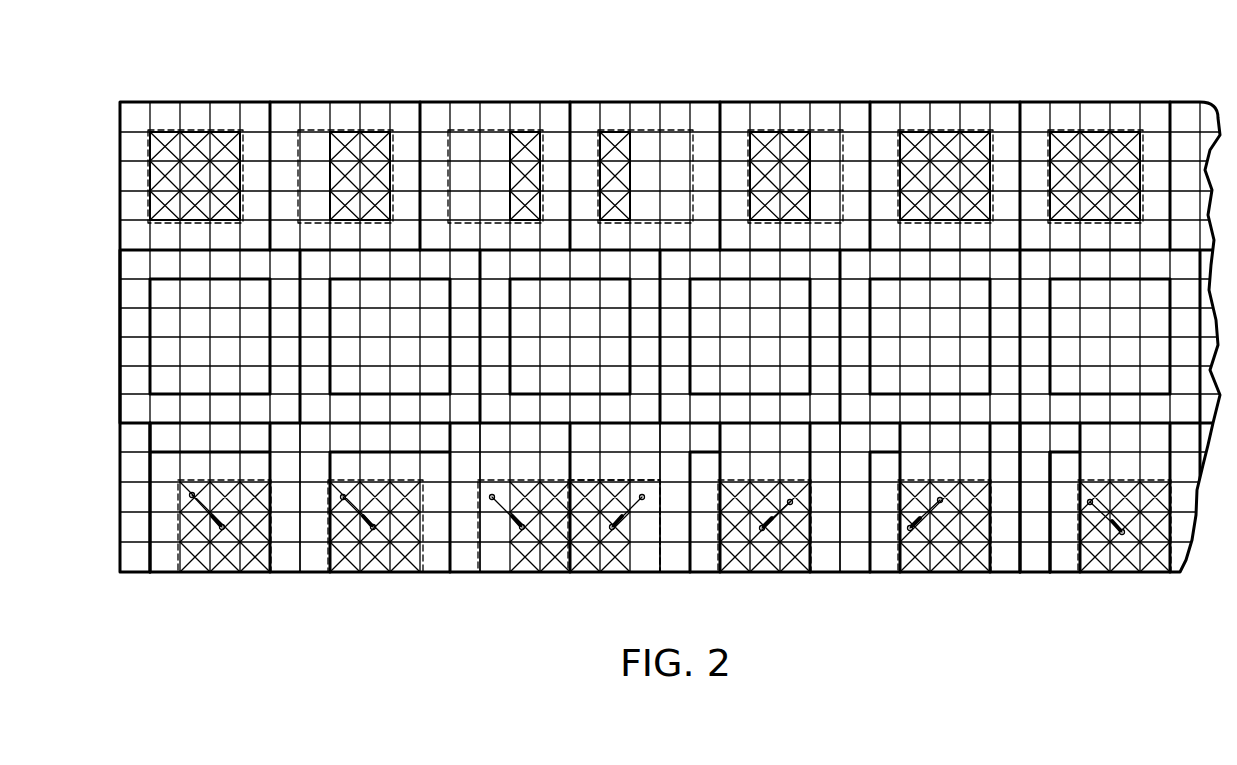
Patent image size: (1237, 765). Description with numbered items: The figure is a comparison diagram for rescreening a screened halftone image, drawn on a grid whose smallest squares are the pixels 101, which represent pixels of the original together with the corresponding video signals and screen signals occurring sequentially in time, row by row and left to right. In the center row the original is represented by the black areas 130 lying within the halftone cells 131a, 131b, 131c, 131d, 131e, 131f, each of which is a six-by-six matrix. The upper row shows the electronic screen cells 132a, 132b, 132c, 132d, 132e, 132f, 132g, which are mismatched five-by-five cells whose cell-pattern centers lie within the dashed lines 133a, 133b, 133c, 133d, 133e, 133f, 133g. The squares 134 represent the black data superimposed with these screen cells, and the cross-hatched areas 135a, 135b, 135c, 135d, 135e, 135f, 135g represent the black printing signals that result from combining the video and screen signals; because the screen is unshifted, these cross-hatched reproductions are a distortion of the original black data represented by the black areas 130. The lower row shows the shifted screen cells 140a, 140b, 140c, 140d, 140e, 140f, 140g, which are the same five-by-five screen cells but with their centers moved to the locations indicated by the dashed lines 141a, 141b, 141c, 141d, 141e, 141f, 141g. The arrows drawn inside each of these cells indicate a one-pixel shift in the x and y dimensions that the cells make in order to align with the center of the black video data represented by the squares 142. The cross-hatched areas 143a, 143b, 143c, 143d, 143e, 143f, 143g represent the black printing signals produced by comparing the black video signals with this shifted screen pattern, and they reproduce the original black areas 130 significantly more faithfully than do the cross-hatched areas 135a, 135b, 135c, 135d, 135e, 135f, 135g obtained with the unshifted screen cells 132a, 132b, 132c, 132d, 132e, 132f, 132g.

The pixels 101 is at (130, 380).
The black areas 130 is at (227, 397).
The halftone cell 131a is at (130, 271).
The halftone cell 131b is at (312, 271).
The halftone cell 131c is at (492, 271).
The halftone cell 131d is at (668, 272).
The halftone cell 131e is at (850, 271).
The halftone cell 131f is at (1030, 271).
The electronic screen cell 132a is at (272, 102).
The electronic screen cell 132b is at (422, 102).
The electronic screen cell 132c is at (612, 74).
The electronic screen cell 132d is at (712, 100).
The electronic screen cell 132e is at (848, 102).
The electronic screen cell 132f is at (972, 102).
The electronic screen cell 132g is at (1072, 102).
The dashed lines 133a is at (197, 130).
The dashed lines 133b is at (368, 128).
The dashed lines 133c is at (543, 90).
The dashed lines 133d is at (650, 128).
The dashed lines 133e is at (778, 128).
The dashed lines 133f is at (937, 128).
The dashed lines 133g is at (1082, 128).
The squares 134 is at (148, 173).
The cross-hatched area 135a is at (150, 210).
The cross-hatched area 135b is at (365, 205).
The cross-hatched area 135c is at (522, 215).
The cross-hatched area 135d is at (615, 217).
The cross-hatched area 135e is at (790, 215).
The cross-hatched area 135f is at (963, 212).
The cross-hatched area 135g is at (1118, 213).
The shifted screen cell 140a is at (138, 562).
The shifted screen cell 140b is at (291, 565).
The shifted screen cell 140c is at (460, 560).
The shifted screen cell 140d is at (670, 560).
The shifted screen cell 140e is at (847, 560).
The shifted screen cell 140f is at (998, 565).
The shifted screen cell 140g is at (1035, 565).
The dashed lines 141a is at (252, 476).
The dashed lines 141b is at (402, 476).
The dashed lines 141c is at (558, 476).
The dashed lines 141d is at (627, 476).
The dashed lines 141e is at (785, 476).
The dashed lines 141f is at (950, 476).
The dashed lines 141g is at (1143, 476).
The squares 142 is at (222, 450).
The cross-hatched area 143a is at (208, 575).
The cross-hatched area 143b is at (377, 575).
The cross-hatched area 143c is at (522, 575).
The cross-hatched area 143d is at (588, 575).
The cross-hatched area 143e is at (758, 575).
The cross-hatched area 143f is at (927, 575).
The cross-hatched area 143g is at (1158, 575).